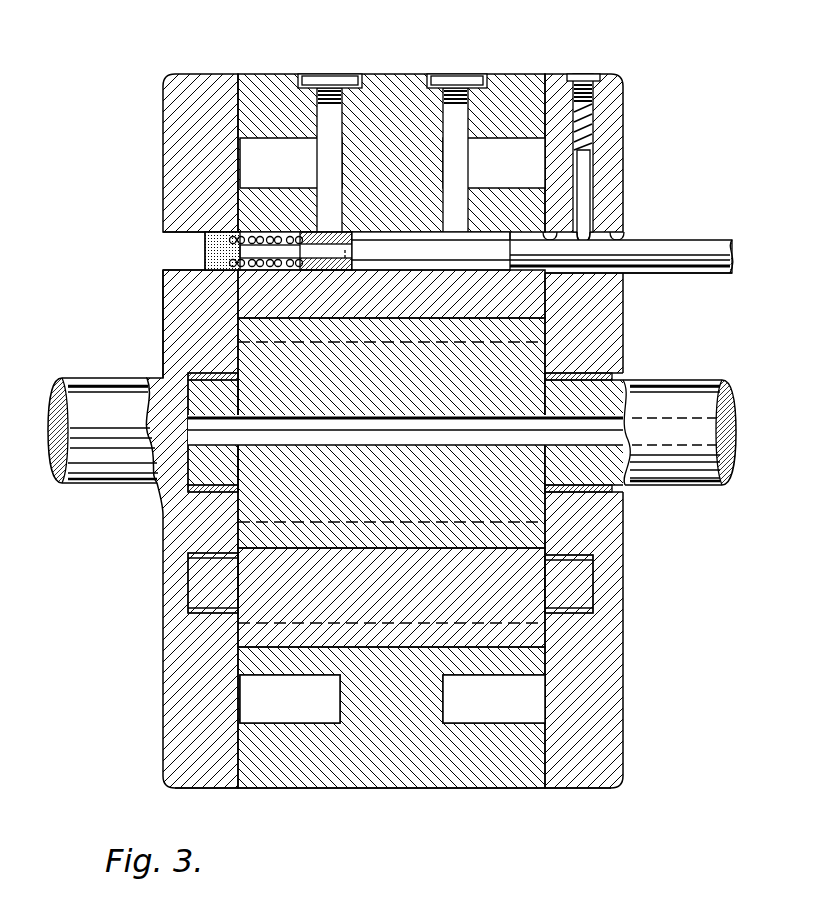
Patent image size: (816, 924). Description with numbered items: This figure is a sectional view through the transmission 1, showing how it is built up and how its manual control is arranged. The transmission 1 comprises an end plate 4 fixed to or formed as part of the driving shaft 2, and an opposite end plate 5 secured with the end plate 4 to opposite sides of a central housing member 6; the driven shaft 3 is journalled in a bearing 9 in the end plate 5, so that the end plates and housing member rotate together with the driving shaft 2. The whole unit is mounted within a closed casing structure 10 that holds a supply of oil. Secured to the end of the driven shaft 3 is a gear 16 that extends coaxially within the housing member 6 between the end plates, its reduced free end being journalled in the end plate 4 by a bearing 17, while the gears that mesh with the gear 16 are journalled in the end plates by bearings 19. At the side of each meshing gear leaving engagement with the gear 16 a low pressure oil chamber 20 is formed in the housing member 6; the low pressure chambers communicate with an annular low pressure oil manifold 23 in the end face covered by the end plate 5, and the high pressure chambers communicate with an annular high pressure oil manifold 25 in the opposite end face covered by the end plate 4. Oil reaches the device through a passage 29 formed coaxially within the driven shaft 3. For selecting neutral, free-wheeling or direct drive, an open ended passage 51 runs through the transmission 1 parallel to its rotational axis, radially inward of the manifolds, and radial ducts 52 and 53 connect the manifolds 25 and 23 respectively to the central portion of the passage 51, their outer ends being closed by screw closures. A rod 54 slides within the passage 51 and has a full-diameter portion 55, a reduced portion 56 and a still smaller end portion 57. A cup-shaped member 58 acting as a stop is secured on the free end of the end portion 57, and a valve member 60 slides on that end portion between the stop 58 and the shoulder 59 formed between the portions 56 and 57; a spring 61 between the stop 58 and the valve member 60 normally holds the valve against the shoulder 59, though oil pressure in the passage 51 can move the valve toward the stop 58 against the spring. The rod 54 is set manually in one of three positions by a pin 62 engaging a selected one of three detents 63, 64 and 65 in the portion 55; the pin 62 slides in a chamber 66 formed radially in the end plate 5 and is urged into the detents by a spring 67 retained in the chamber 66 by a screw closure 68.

The transmission 1 is at (395, 414).
The driving shaft 2 is at (80, 378).
The driven shaft 3 is at (698, 380).
The end plate 4 is at (163, 120).
The end plate 5 is at (391, 135).
The central housing member 6 is at (385, 789).
The bearing 9 is at (597, 494).
The casing structure 10 is at (393, 597).
The gear 16 is at (375, 433).
The bearing 17 is at (203, 494).
The bearings 19 is at (195, 612).
The low pressure oil chamber 20 is at (391, 398).
The low pressure oil manifold 23 is at (488, 173).
The high pressure oil manifold 25 is at (278, 171).
The passage 29 is at (434, 441).
The open ended passage 51 is at (621, 235).
The radial duct 52 is at (320, 216).
The radial duct 53 is at (447, 213).
The rod 54 is at (626, 229).
The rod portion 55 is at (696, 254).
The reduced rod portion 56 is at (451, 260).
The end portion 57 is at (221, 243).
The cup-shaped member 58 is at (210, 243).
The shoulder 59 is at (347, 254).
The valve member 60 is at (163, 300).
The spring 61 is at (243, 272).
The pin 62 is at (586, 188).
The detent 63 is at (628, 236).
The detent 64 is at (585, 238).
The detent 65 is at (551, 238).
The chamber 66 is at (594, 134).
The spring 67 is at (600, 122).
The screw closure 68 is at (591, 76).